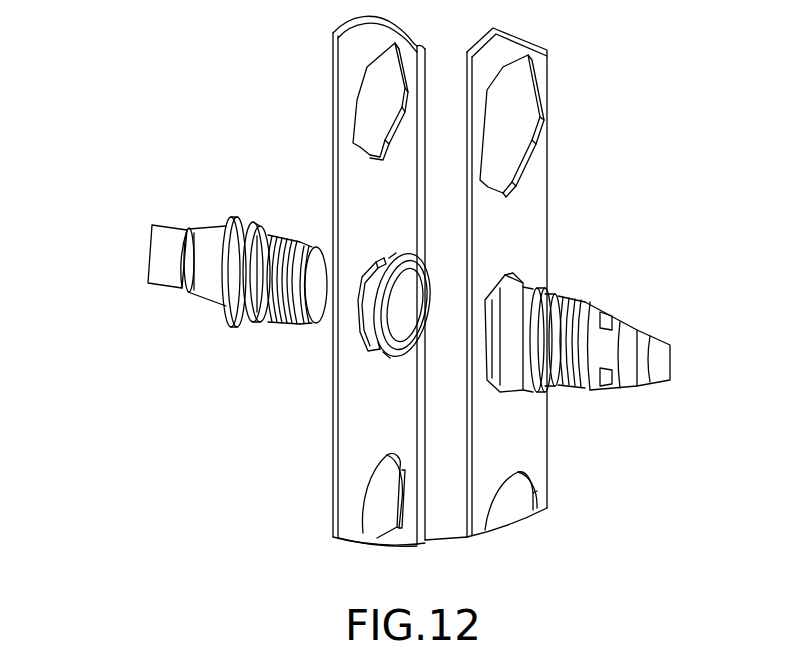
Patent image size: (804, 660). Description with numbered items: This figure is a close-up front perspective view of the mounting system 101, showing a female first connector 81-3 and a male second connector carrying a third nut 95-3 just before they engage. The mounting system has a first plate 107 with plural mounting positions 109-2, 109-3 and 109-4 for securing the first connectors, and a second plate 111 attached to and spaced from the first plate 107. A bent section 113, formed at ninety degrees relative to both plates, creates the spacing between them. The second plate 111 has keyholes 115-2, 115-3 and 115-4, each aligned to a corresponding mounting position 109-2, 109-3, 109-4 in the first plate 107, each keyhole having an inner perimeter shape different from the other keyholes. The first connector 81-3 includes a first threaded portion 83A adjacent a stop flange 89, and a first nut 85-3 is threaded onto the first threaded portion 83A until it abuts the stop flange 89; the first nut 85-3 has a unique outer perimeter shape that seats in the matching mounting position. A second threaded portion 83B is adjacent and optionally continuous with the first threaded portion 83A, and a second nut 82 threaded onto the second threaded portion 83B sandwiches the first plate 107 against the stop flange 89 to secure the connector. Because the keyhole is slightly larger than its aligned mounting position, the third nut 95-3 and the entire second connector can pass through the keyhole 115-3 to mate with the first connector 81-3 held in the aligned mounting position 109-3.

The patch panel 101 is at (628, 108).
The first plate 107 is at (357, 442).
The second plate 111 is at (533, 422).
The bent section 113 is at (447, 518).
The mounting position 109-2 is at (340, 513).
The mounting position 109-3 is at (368, 275).
The mounting position 109-4 is at (378, 48).
The keyhole 115-2 is at (535, 495).
The keyhole 115-3 is at (530, 272).
The keyhole 115-4 is at (535, 160).
The second nut 82 is at (392, 362).
The first connector 81-3 is at (188, 319).
The first threaded portion 83A is at (290, 236).
The second threaded portion 83B is at (318, 244).
The first nut 85-3 is at (280, 230).
The stop flange 89 is at (243, 330).
The third nut 95-3 is at (565, 301).